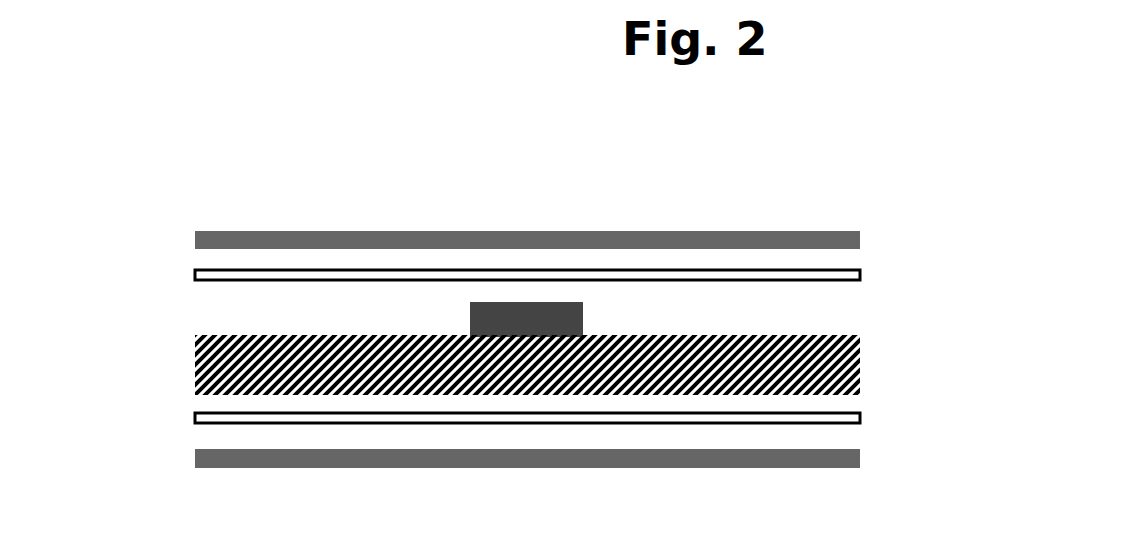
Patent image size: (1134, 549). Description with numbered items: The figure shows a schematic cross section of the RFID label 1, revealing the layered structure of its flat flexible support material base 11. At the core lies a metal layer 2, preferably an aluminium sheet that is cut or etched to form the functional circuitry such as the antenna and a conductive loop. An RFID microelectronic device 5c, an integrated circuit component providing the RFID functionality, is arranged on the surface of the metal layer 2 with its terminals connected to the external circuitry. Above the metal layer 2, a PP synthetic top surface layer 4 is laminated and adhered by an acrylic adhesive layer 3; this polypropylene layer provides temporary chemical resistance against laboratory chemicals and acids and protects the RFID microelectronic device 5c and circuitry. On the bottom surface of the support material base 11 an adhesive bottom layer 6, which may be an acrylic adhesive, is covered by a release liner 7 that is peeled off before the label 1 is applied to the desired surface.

The RFID label 1 is at (358, 200).
The metal layer 2 is at (868, 372).
The acrylic adhesive layer 3 is at (868, 279).
The PP synthetic top surface layer 4 is at (868, 240).
The RFID microelectronic device 5c is at (540, 313).
The adhesive bottom layer 6 is at (867, 422).
The release liner 7 is at (867, 465).
The flat support material base 11 is at (1007, 217).